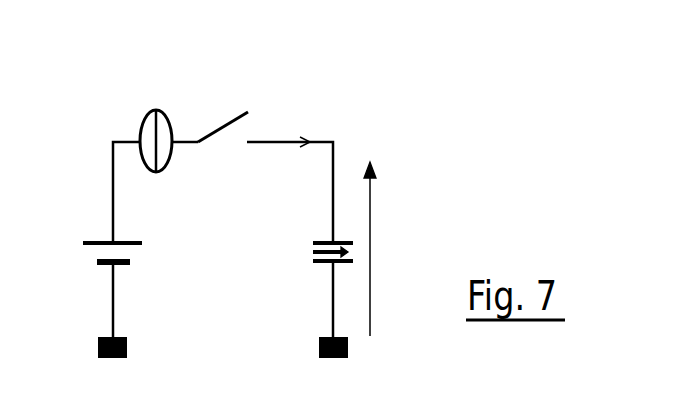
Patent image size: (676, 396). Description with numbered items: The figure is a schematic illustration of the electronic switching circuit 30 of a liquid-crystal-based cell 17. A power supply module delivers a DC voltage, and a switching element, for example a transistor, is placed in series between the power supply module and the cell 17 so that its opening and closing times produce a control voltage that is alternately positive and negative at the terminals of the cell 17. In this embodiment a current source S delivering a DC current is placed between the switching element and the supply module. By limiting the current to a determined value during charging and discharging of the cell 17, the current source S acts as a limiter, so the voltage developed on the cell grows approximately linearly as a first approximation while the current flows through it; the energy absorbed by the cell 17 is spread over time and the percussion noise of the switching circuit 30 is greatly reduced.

The electronic switching circuit 30 is at (120, 100).
The current source S is at (167, 116).
The cell 17 is at (317, 272).